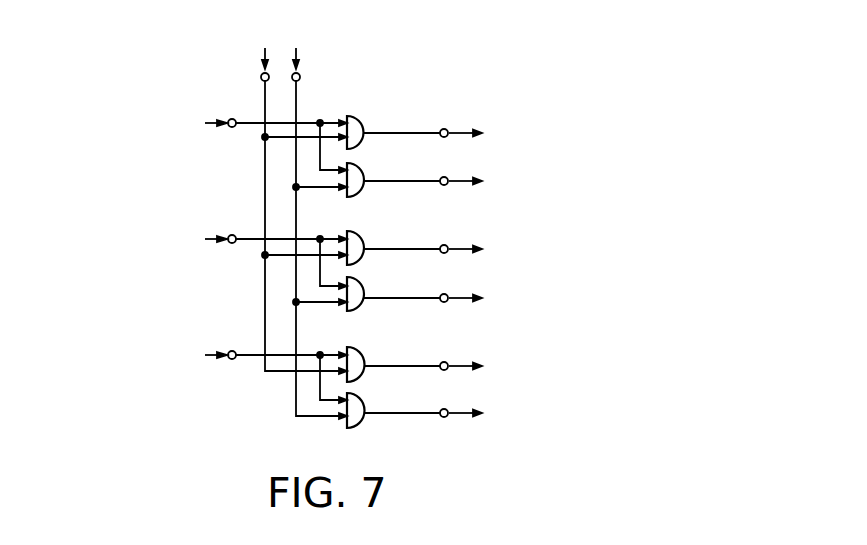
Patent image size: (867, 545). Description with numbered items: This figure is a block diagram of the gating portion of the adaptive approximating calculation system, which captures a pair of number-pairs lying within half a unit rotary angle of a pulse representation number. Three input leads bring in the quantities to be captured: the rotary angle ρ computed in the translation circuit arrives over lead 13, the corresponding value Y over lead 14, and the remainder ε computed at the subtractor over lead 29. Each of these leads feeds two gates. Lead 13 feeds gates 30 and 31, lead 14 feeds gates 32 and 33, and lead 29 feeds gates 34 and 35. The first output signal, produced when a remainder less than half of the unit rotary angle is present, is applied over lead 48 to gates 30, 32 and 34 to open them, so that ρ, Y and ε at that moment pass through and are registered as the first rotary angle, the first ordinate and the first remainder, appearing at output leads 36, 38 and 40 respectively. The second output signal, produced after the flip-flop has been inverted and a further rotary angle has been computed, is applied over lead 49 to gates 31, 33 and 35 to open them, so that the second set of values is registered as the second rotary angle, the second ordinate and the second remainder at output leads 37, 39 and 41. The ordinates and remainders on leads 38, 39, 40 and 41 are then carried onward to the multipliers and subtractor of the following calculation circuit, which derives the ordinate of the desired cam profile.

The lead 13 is at (233, 119).
The lead 14 is at (234, 234).
The lead 29 is at (237, 350).
The gate 30 is at (358, 120).
The gate 31 is at (360, 173).
The gate 32 is at (360, 242).
The gate 33 is at (361, 286).
The gate 34 is at (360, 358).
The gate 35 is at (361, 406).
The output lead 36 is at (444, 129).
The output lead 37 is at (444, 177).
The lead 38 is at (444, 245).
The lead 39 is at (442, 272).
The lead 40 is at (444, 362).
The lead 41 is at (442, 387).
The lead 48 is at (261, 77).
The lead 49 is at (300, 74).